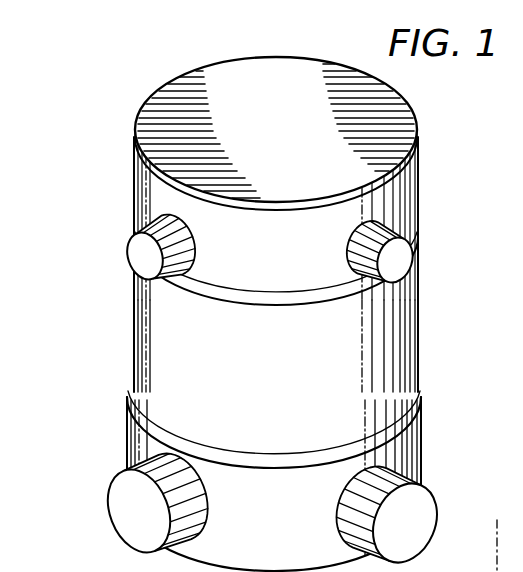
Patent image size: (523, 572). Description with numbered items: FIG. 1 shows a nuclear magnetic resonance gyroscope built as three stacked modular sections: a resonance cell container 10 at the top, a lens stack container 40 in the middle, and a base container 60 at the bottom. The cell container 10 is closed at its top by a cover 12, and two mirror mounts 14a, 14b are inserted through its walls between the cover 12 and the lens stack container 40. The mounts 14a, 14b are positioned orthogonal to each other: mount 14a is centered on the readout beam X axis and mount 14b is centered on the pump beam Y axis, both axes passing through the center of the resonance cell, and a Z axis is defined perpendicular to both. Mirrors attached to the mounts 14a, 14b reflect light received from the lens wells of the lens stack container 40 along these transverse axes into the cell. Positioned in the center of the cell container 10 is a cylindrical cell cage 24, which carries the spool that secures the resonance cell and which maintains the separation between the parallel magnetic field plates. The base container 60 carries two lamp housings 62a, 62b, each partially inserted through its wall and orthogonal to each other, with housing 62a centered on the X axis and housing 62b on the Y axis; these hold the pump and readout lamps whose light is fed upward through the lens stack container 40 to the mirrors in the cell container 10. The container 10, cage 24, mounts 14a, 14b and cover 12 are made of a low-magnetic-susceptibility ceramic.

The resonance cell container 10 is at (165, 75).
The cover 12 is at (408, 115).
The mirror mount 14a is at (180, 239).
The mirror mount 14b is at (408, 232).
The lens stack container 40 is at (125, 247).
The base container 60 is at (120, 393).
The lamp housing 62a is at (204, 496).
The lamp housing 62b is at (349, 497).
The cell cage 24 is at (506, 536).